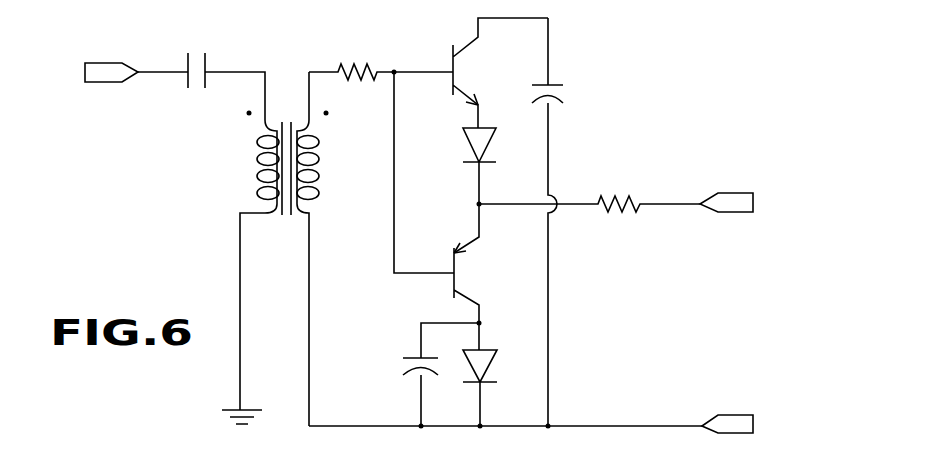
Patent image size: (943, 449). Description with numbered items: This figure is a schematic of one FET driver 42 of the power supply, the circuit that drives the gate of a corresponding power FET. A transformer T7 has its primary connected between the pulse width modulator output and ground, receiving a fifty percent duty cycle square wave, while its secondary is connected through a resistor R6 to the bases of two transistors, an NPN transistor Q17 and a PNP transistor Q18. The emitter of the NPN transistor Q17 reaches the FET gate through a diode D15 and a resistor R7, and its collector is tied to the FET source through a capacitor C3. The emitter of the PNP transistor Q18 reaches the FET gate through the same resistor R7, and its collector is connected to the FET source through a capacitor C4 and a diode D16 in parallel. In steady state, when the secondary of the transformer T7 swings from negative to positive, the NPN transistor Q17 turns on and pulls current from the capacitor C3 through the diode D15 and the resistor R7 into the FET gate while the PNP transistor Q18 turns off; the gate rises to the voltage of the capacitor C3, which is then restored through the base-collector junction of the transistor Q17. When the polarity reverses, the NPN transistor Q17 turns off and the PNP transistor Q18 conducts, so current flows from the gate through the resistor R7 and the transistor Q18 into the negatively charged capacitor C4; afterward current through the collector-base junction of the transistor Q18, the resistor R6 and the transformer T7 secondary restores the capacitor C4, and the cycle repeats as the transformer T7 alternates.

The FET driver 42 is at (667, 95).
The transformer T7 is at (269, 249).
The resistor R6 is at (381, 57).
The NPN transistor Q17 is at (500, 73).
The diode D15 is at (500, 166).
The capacitor C3 is at (565, 222).
The resistor R7 is at (589, 190).
The PNP transistor Q18 is at (488, 263).
The capacitor C4 is at (404, 391).
The diode D16 is at (501, 374).